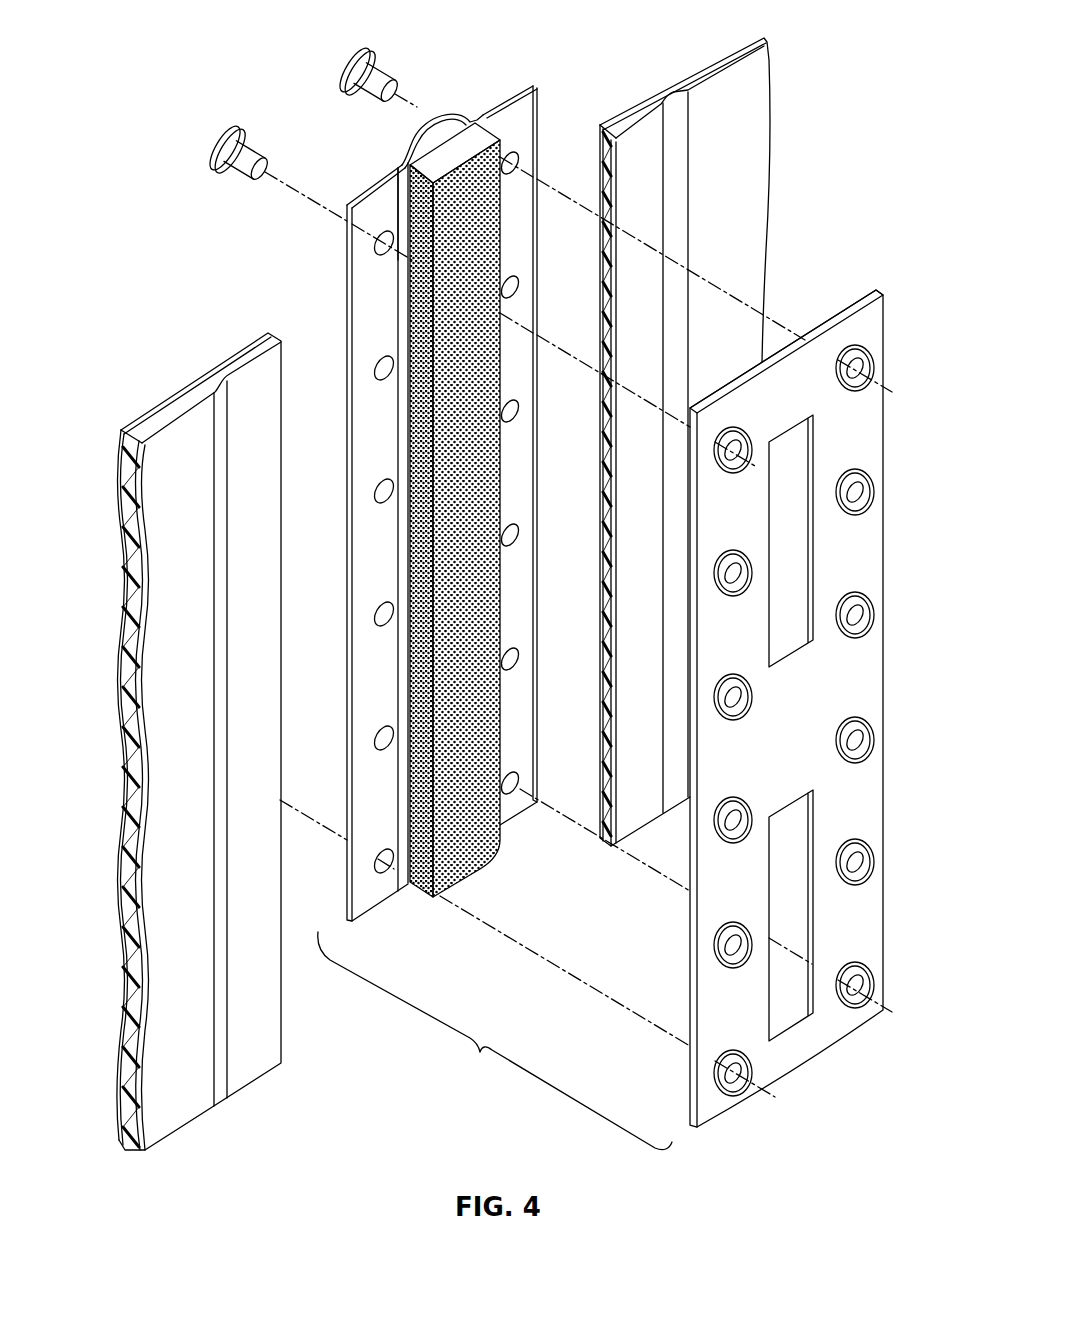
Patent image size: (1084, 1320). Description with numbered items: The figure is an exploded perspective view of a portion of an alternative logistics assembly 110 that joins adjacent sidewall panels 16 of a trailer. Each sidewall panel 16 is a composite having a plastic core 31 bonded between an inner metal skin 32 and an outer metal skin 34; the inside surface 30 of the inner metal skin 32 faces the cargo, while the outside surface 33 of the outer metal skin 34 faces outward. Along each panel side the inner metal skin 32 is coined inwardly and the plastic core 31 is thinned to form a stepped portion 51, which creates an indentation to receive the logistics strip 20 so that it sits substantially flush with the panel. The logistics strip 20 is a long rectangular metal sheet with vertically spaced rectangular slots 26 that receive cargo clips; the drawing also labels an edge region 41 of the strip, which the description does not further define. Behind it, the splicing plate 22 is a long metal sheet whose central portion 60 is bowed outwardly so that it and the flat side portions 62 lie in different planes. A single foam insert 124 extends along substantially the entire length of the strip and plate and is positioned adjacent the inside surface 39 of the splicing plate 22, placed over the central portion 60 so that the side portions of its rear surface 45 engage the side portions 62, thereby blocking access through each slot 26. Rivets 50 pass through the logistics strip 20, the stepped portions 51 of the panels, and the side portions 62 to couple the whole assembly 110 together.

The sidewall panel 16 is at (775, 112).
The logistics strip 20 is at (885, 555).
The splicing plate 22 is at (343, 248).
The slot 26 is at (803, 480).
The inside surface 30 is at (187, 1118).
The plastic core 31 is at (130, 772).
The inner metal skin 32 is at (160, 922).
The outside surface 33 is at (122, 572).
The outer metal skin 34 is at (122, 707).
The inside surface of the splicing plate 39 is at (450, 132).
The plate top edge 41 is at (850, 298).
The rear surface 45 is at (425, 150).
The rivet 50 is at (208, 140).
The stepped portion 51 is at (250, 1045).
The central portion 60 is at (432, 118).
The side portion 62 is at (352, 202).
The logistics assembly 110 is at (495, 1041).
The insert 124 is at (507, 250).